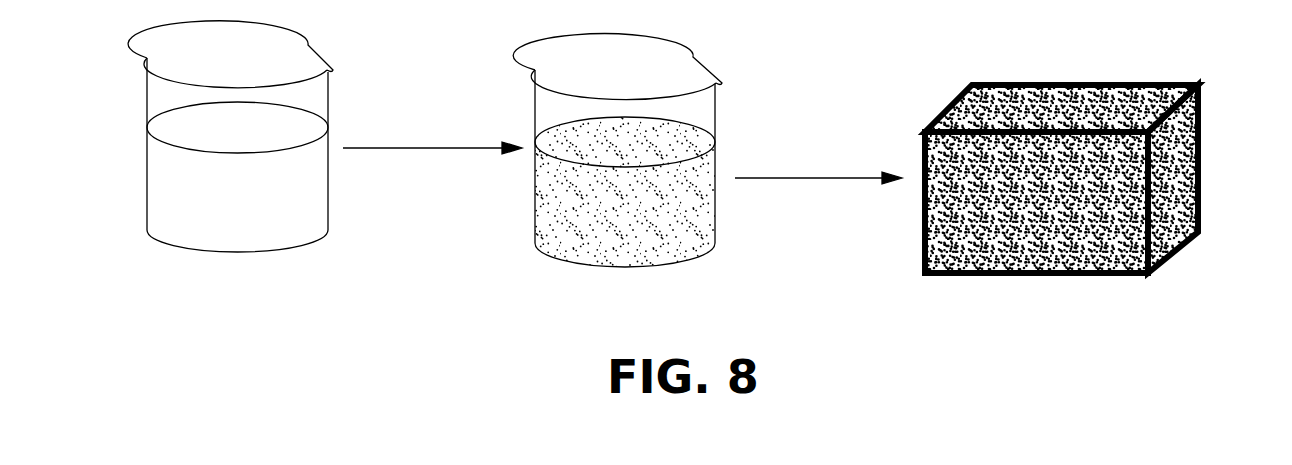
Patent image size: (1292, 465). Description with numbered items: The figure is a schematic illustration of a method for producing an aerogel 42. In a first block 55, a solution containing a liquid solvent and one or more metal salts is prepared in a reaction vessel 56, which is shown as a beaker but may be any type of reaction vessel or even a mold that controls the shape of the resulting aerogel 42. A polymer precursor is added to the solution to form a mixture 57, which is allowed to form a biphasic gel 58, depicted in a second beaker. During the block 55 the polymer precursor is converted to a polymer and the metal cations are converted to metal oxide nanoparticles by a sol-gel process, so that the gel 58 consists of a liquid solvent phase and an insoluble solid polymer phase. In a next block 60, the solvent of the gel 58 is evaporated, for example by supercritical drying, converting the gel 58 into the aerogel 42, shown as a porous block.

The aerogel 42 is at (1198, 167).
The first block 55 is at (416, 148).
The reaction vessel 56 is at (328, 183).
The mixture 57 is at (168, 183).
The biphasic gel 58 is at (700, 190).
The next block 60 is at (817, 180).